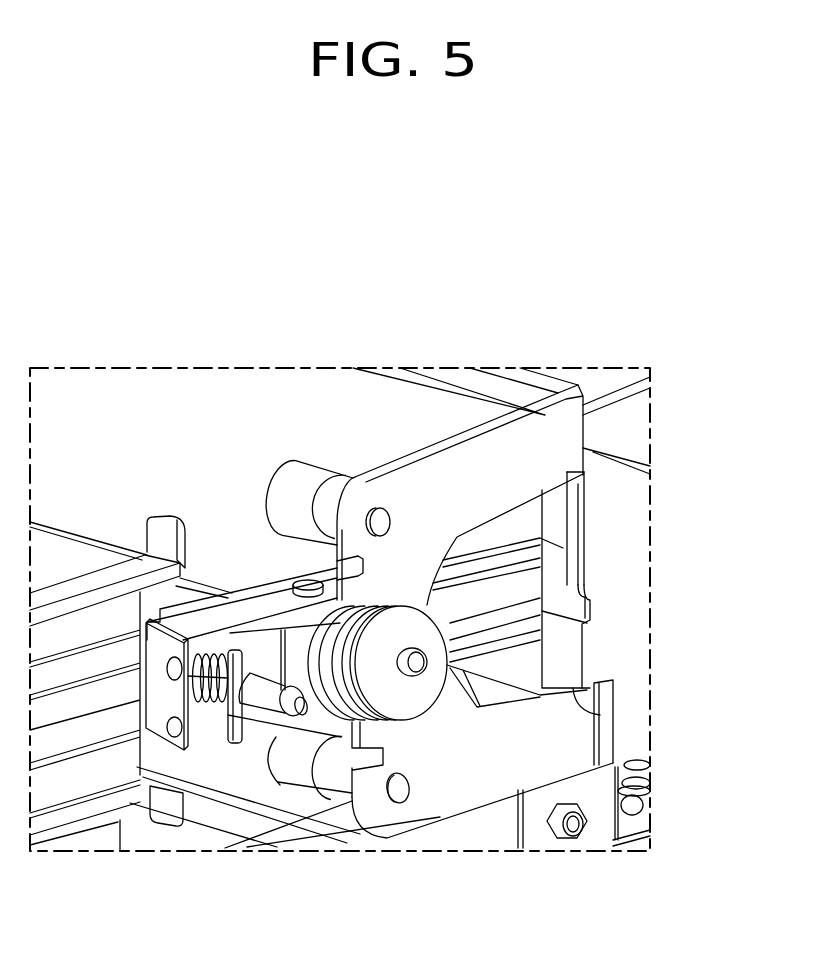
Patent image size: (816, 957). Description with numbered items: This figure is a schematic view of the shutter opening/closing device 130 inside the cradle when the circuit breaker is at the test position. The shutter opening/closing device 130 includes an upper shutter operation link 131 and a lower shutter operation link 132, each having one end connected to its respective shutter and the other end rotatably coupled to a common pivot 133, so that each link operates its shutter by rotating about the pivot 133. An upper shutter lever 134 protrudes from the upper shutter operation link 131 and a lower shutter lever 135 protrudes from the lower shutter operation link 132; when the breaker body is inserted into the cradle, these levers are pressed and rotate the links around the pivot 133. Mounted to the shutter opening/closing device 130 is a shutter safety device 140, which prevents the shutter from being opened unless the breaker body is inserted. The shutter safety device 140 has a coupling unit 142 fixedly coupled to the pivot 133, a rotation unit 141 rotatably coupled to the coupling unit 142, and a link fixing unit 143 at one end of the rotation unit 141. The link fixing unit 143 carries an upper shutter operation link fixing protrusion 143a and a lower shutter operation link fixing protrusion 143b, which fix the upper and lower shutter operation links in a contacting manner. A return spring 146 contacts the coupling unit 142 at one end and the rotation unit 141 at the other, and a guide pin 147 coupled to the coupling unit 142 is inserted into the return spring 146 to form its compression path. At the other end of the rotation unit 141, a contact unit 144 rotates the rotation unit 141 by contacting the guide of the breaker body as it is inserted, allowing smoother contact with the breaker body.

The shutter opening/closing device 130 is at (413, 448).
The upper shutter operation link 131 is at (458, 797).
The lower shutter operation link 132 is at (483, 516).
The pivot 133 is at (421, 661).
The upper shutter lever 134 is at (335, 792).
The lower shutter lever 135 is at (310, 472).
The shutter safety device 140 is at (200, 758).
The rotation unit 141 is at (262, 592).
The coupling unit 142 is at (242, 735).
The link fixing unit 143 is at (557, 568).
The upper shutter operation link fixing protrusion 143a is at (590, 716).
The lower shutter operation link fixing protrusion 143b is at (578, 485).
The contact unit 144 is at (157, 718).
The return spring 146 is at (210, 655).
The guide pin 147 is at (268, 710).